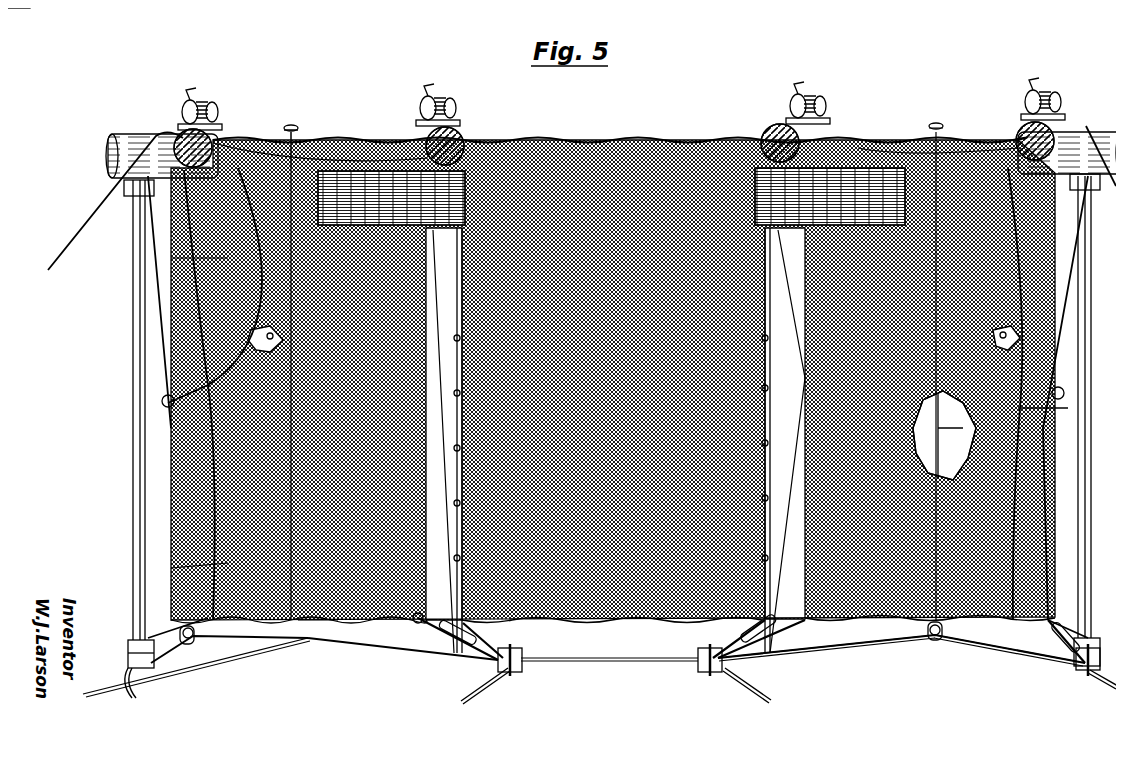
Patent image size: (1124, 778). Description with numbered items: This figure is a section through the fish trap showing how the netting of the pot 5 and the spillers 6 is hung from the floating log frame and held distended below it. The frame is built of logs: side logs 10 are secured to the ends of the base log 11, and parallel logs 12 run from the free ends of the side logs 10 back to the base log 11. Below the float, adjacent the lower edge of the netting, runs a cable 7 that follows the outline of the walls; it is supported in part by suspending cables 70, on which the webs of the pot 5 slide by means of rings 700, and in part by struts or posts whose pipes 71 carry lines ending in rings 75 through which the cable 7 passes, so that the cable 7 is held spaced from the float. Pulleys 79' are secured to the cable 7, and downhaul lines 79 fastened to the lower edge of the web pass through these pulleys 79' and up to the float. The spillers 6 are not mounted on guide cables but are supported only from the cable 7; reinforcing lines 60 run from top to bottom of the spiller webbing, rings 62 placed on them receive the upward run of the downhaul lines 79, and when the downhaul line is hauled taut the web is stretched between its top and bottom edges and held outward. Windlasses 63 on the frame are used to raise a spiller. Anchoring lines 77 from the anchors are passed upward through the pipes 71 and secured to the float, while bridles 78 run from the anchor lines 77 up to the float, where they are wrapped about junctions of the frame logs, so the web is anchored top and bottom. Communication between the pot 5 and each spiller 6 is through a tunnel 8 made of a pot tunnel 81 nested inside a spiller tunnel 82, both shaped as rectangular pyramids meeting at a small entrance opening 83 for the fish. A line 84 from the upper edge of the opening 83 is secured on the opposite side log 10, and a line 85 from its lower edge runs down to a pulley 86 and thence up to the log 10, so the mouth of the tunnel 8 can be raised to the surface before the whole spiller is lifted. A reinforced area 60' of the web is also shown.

The pot 5 is at (568, 190).
The spillers 6 is at (163, 560).
The cable 7 is at (170, 655).
The tunnel 8 is at (890, 135).
The side log 10 is at (168, 128).
The base log 11 is at (625, 142).
The parallel log 12 is at (500, 104).
The reinforcing line 60 is at (322, 648).
The opening in net 60' is at (944, 435).
The ring 62 is at (158, 393).
The windlass 63 is at (420, 100).
The suspending cable 70 is at (445, 395).
The rings 700 is at (452, 350).
The pipe 71 is at (127, 494).
The ring 75 is at (512, 660).
The anchoring line 77 is at (80, 688).
The bridle 78 is at (70, 216).
The downhaul line 79 is at (604, 426).
The pulley 79' is at (618, 648).
The pot tunnel 81 is at (611, 196).
The spiller tunnel 82 is at (360, 150).
The entrance opening 83 is at (300, 160).
The line 84 is at (250, 135).
The line 85 is at (163, 250).
The pulley 86 is at (245, 330).